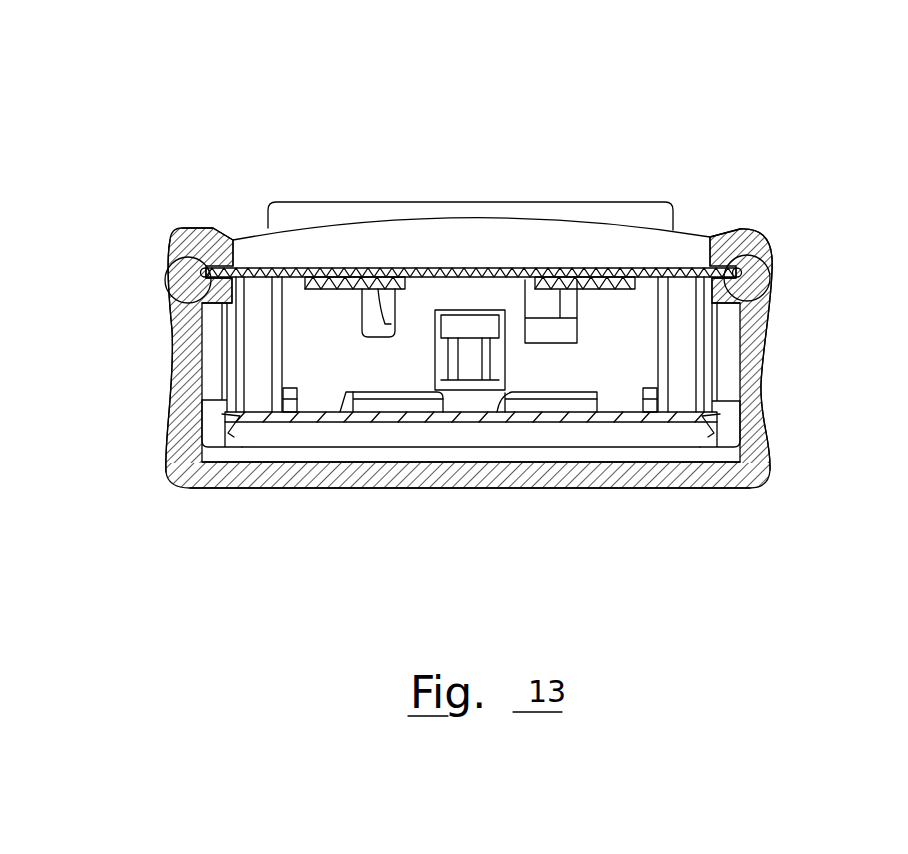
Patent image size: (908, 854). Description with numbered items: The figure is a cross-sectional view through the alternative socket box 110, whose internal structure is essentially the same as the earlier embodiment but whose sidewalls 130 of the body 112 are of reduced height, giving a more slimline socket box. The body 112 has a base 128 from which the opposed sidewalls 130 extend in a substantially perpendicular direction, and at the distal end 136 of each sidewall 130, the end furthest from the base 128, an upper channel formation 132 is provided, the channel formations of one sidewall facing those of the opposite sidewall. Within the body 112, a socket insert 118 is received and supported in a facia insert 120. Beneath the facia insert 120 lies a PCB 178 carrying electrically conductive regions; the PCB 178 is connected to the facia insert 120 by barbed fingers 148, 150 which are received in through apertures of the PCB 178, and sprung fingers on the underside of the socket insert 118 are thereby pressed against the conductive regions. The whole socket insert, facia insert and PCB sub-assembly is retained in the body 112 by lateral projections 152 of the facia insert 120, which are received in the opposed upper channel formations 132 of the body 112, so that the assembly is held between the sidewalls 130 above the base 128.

The socket box 110 is at (628, 112).
The body 112 is at (753, 488).
The socket insert 118 is at (268, 204).
The facia insert 120 is at (678, 246).
The base 128 is at (519, 490).
The sidewall 130 is at (177, 392).
The upper channel formation 132 is at (200, 270).
The sidewall distal end 136 is at (212, 226).
The barbed finger 148 is at (228, 447).
The barb 150 is at (697, 447).
The lateral projection 152 is at (205, 294).
The PCB 178 is at (397, 420).